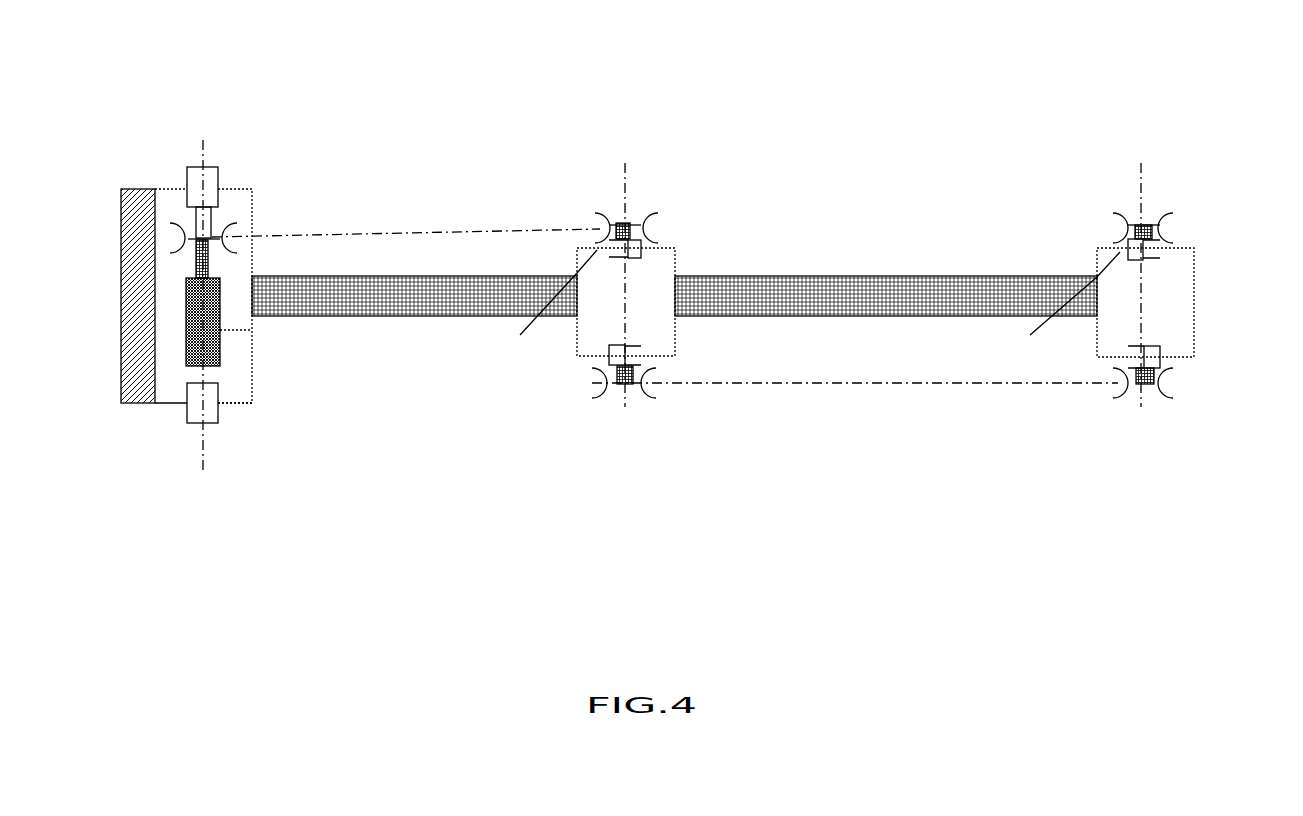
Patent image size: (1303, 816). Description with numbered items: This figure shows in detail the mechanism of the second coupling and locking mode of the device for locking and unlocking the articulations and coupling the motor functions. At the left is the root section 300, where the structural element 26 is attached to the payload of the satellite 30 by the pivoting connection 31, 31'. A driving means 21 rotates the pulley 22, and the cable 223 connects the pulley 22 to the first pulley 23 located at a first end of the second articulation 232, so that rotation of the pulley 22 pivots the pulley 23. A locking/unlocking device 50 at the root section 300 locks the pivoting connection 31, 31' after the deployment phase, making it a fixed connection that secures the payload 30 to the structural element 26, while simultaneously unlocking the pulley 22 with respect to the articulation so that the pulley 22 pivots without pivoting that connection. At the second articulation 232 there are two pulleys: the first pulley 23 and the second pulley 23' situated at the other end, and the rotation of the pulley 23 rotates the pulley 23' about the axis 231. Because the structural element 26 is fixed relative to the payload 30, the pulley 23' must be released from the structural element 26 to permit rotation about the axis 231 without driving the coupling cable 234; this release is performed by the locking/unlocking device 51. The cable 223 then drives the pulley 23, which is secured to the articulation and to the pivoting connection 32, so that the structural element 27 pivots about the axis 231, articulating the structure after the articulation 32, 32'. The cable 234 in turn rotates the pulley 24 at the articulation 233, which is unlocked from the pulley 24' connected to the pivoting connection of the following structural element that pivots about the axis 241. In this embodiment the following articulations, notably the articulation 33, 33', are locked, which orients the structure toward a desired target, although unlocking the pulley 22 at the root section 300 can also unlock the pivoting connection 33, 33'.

The root section 300 is at (183, 144).
The payload of the satellite 30 is at (127, 330).
The pivoting connection 31 is at (252, 308).
The pivoting connection 31' is at (187, 287).
The locking/unlocking device 50 is at (203, 220).
The pulley 22 is at (233, 225).
The driving means 21 is at (222, 355).
The cable 223 is at (418, 228).
The structural element 26 is at (431, 303).
The structural element 27 is at (958, 287).
The second articulation 232 is at (568, 374).
The axis 231 is at (633, 158).
The first pulley 23 is at (680, 191).
The pivoting connection 32 is at (693, 295).
The pivoting connection 32' is at (562, 307).
The locking/unlocking device 51 is at (645, 398).
The second pulley 23' is at (615, 435).
The cable 234 is at (880, 397).
The articulation 233 is at (1206, 366).
The axis 241 is at (1131, 180).
The pulley 24' is at (1199, 191).
The pivoting connection 33 is at (1199, 294).
The pivoting connection 33' is at (1079, 310).
The pulley 24 is at (1180, 435).